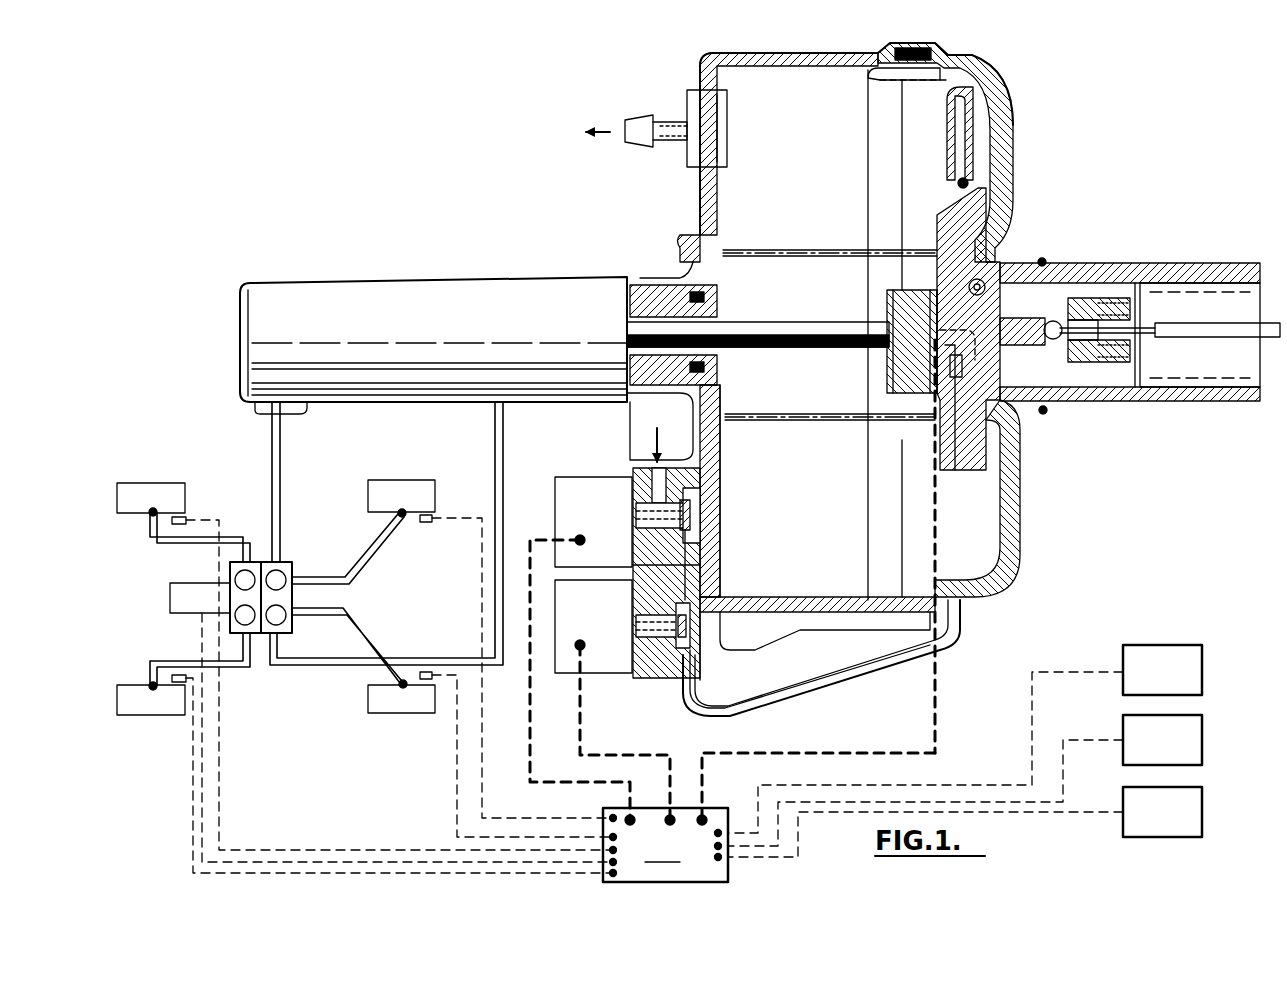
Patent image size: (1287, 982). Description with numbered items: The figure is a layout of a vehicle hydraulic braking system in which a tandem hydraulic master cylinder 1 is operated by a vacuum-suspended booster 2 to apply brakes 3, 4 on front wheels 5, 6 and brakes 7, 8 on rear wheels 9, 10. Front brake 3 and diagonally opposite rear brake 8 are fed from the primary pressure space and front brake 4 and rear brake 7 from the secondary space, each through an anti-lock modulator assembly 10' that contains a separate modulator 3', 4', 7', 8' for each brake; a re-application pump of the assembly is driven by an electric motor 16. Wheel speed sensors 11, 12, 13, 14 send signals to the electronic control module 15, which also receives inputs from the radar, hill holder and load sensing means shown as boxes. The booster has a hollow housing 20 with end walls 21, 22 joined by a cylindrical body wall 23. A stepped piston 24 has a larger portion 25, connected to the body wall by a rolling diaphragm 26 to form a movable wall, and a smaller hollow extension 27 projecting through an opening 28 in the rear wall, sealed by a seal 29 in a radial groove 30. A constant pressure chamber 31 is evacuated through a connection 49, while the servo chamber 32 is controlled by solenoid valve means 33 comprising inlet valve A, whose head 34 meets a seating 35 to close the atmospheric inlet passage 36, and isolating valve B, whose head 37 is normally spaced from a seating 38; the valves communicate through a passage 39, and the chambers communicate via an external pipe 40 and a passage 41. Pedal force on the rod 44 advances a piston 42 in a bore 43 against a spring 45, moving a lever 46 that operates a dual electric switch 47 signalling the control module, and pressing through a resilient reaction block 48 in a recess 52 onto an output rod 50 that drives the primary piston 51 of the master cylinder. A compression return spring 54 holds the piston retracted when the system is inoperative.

The tandem hydraulic master cylinder 1 is at (463, 318).
The vacuum-suspended booster 2 is at (703, 212).
The front wheel brake 3 is at (174, 536).
The modulator 3' is at (248, 526).
The front wheel brake 4 is at (171, 657).
The modulator 4' is at (186, 639).
The front wheel 5 is at (135, 495).
The front wheel 6 is at (165, 715).
The rear wheel brake 7 is at (350, 546).
The modulator 7' is at (349, 648).
The rear wheel brake 8 is at (386, 556).
The modulator 8' is at (294, 482).
The rear wheel 9 is at (410, 495).
The rear wheel 10 is at (402, 725).
The anti-lock modulator assembly 10' is at (371, 705).
The speed sensor 11 is at (186, 519).
The speed sensor 12 is at (187, 680).
The speed sensor 13 is at (428, 522).
The speed sensor 14 is at (428, 672).
The control module 15 is at (866, 711).
The electric motor 16 is at (190, 600).
The hollow housing 20 is at (703, 55).
The end wall 21 is at (700, 110).
The end wall 22 is at (1000, 140).
The cylindrical body wall 23 is at (796, 62).
The piston 24 is at (1000, 230).
The larger diameter portion 25 is at (957, 135).
The rolling diaphragm 26 is at (900, 80).
The smaller diameter portion 27 is at (1170, 285).
The opening 28 is at (1100, 268).
The seal 29 is at (1044, 258).
The radial groove 30 is at (1040, 403).
The constant pressure chamber 31 is at (825, 514).
The servo pressure chamber 32 is at (985, 105).
The solenoid-operated valve means 33 is at (578, 508).
The valve head 34 is at (690, 540).
The seating 35 is at (700, 490).
The inlet passage 36 is at (652, 470).
The valve head 37 is at (710, 605).
The seating 38 is at (710, 640).
The passage 39 is at (690, 575).
The external pipe 40 is at (886, 665).
The passage 41 is at (740, 620).
The piston 42 is at (1110, 362).
The bore 43 is at (1085, 362).
The rod 44 is at (1225, 327).
The spring 45 is at (1120, 300).
The lever 46 is at (1008, 300).
The dual electric switch 47 is at (965, 350).
The reaction block 48 is at (910, 348).
The vacuum connection 49 is at (630, 140).
The output rod 50 is at (810, 325).
The primary piston 51 is at (680, 300).
The recess 52 is at (905, 290).
The compression return spring 54 is at (780, 250).